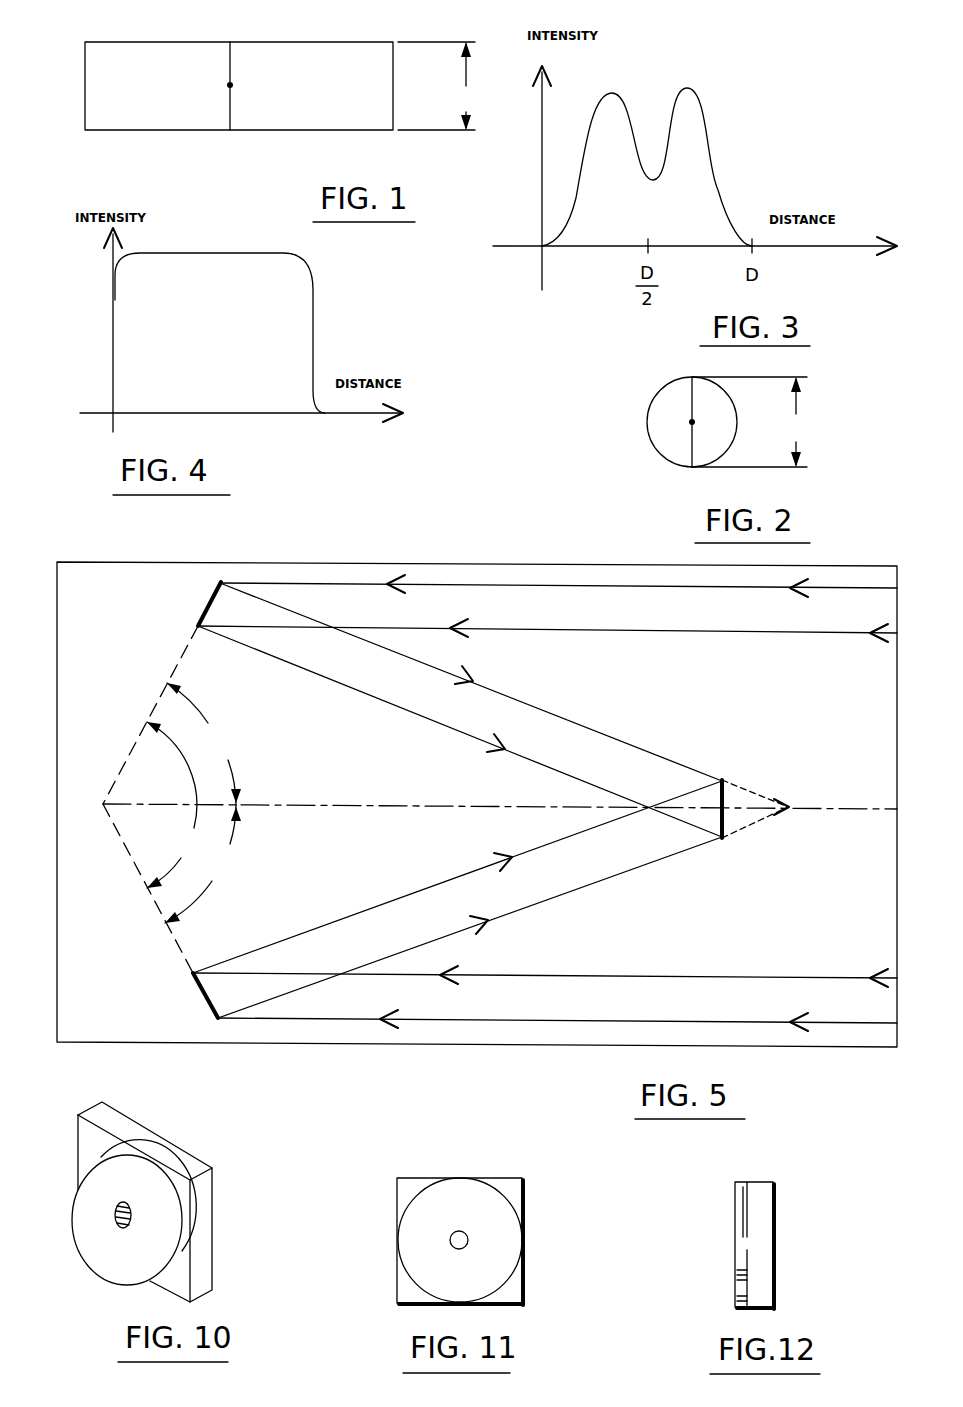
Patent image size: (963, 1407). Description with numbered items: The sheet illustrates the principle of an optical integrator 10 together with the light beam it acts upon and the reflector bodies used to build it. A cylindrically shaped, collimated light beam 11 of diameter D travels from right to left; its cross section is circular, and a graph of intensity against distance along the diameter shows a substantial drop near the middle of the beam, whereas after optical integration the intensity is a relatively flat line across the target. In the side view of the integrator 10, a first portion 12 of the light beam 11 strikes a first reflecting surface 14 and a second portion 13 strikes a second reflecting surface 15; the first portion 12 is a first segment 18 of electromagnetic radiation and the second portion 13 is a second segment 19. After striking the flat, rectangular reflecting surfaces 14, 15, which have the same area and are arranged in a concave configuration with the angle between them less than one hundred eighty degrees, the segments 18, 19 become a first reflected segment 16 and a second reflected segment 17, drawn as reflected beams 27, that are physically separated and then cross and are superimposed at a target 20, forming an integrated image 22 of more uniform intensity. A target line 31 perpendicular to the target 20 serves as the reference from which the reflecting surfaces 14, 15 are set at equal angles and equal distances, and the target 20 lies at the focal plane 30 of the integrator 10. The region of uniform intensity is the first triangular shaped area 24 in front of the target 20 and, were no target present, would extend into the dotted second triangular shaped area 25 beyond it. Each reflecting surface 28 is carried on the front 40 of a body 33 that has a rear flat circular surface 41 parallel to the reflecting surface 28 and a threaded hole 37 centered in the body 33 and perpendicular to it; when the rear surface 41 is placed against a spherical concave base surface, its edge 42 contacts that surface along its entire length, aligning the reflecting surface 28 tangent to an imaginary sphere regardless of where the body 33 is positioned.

In FIG. 5, the optical integrator 10 is at (43, 990).
In FIG. 1, the light beam 11 is at (350, 52).
In FIG. 2, the light beam 11 is at (670, 443).
In FIG. 5, the light beam 11 is at (814, 713).
In FIG. 5, the first portion of the light beam 12 is at (327, 601).
In FIG. 5, the second portion of the light beam 13 is at (340, 1002).
In FIG. 5, the first reflecting surface 14 is at (208, 611).
In FIG. 5, the second reflecting surface 15 is at (203, 974).
In FIG. 5, the first reflected segment of electromagnetic radiation 16 is at (288, 640).
In FIG. 5, the second reflected segment of electromagnetic radiation 17 is at (357, 931).
In FIG. 5, the first segment of electromagnetic radiation 18 is at (267, 595).
In FIG. 5, the second segment of electromagnetic radiation 19 is at (298, 1010).
In FIG. 5, the target 20 is at (727, 821).
In FIG. 5, the image 22 is at (718, 826).
In FIG. 5, the first triangular shaped area 24 is at (697, 801).
In FIG. 5, the second triangular shaped area 25 is at (762, 816).
In FIG. 5, the reflected beam 27 is at (340, 663).
In FIG. 5, the reflecting surface 28 is at (248, 584).
In FIG. 12, the reflecting surface 28 is at (778, 1277).
In FIG. 5, the focal plane 30 is at (730, 793).
In FIG. 5, the target line 31 is at (470, 806).
In FIG. 10, the body 33 is at (173, 1157).
In FIG. 11, the body 33 is at (498, 1177).
In FIG. 12, the body 33 is at (752, 1182).
In FIG. 10, the threaded hole 37 is at (115, 1222).
In FIG. 11, the threaded hole 37 is at (455, 1238).
In FIG. 12, the front of the body 40 is at (778, 1223).
In FIG. 10, the rear flat circular surface 41 is at (135, 1253).
In FIG. 11, the rear flat circular surface 41 is at (500, 1237).
In FIG. 12, the rear flat circular surface 41 is at (735, 1255).
In FIG. 10, the edge of the rear flat circular surface 42 is at (107, 1267).
In FIG. 11, the edge of the rear flat circular surface 42 is at (467, 1178).
In FIG. 12, the edge of the rear flat circular surface 42 is at (738, 1307).